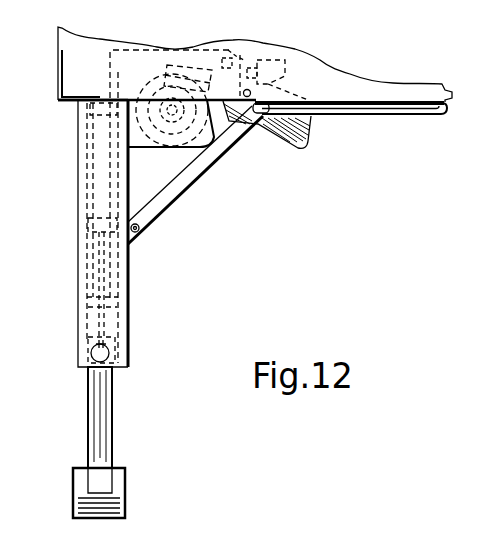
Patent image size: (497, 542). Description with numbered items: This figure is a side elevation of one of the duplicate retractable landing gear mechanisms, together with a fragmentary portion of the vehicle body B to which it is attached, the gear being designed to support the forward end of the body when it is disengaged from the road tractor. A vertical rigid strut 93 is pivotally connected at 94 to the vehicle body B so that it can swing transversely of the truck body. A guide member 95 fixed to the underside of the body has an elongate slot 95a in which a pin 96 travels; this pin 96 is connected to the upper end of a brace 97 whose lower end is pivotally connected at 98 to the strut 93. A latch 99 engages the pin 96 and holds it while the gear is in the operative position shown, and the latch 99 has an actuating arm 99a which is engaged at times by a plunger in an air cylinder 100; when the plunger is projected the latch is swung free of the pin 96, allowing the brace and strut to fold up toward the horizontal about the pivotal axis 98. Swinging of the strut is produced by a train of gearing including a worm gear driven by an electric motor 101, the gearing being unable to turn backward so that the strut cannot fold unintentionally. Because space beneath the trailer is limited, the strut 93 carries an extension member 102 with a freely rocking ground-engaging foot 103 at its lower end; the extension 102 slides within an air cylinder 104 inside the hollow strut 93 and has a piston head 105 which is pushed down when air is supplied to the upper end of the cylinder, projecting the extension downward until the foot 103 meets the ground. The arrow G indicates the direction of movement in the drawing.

The vehicle body B is at (352, 80).
The vertical rigid strut 93 is at (125, 318).
The pivotal connection 94 is at (110, 113).
The guide member 95 is at (443, 111).
The elongate slot 95a is at (413, 104).
The pin 96 is at (267, 115).
The brace 97 is at (196, 176).
The pivotal connection 98 is at (138, 232).
The latch 99 is at (296, 70).
The actuating arm 99a is at (246, 92).
The air cylinder 100 is at (276, 58).
The electric motor 101 is at (306, 143).
The extension member 102 is at (113, 430).
The ground-engaging foot 103 is at (123, 505).
The air cylinder 104 is at (102, 187).
The piston head 105 is at (97, 228).
The direction arrow G is at (175, 266).